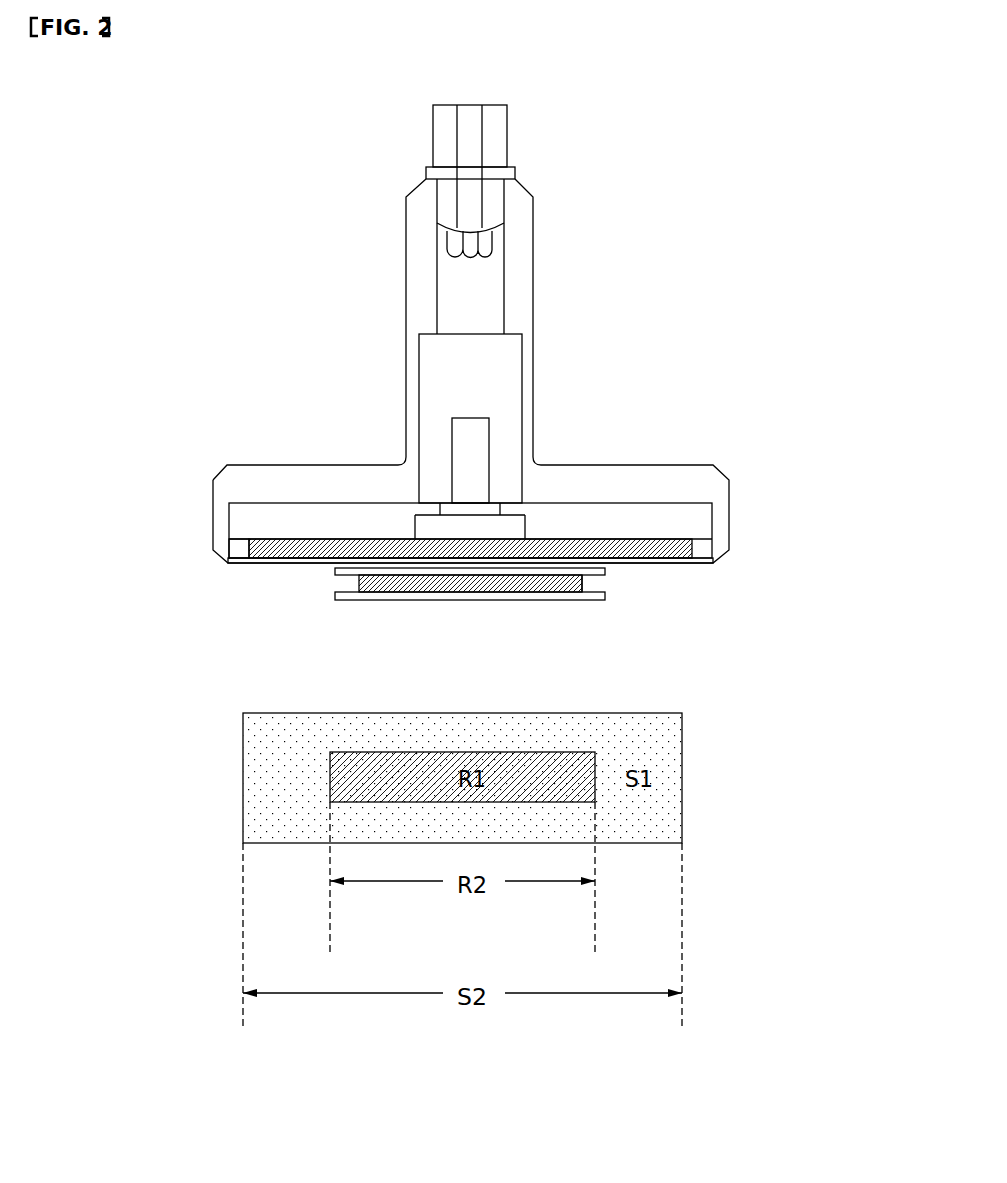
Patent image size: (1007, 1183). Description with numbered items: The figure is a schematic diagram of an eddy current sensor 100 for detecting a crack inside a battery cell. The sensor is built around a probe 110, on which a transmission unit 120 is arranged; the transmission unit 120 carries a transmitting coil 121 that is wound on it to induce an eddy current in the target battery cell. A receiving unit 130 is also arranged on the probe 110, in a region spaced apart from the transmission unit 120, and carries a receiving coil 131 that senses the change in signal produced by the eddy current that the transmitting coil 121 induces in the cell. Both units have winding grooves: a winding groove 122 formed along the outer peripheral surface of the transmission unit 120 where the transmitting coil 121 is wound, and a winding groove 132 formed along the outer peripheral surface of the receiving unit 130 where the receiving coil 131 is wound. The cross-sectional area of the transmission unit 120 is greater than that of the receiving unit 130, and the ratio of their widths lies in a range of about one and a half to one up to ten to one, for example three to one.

The eddy current sensor 100 is at (326, 322).
The probe 110 is at (243, 518).
The transmission unit 120 is at (725, 543).
The transmitting coil 121 is at (277, 560).
The winding groove 122 is at (245, 555).
The receiving unit 130 is at (647, 582).
The receiving coil 131 is at (385, 583).
The winding groove 132 is at (582, 583).